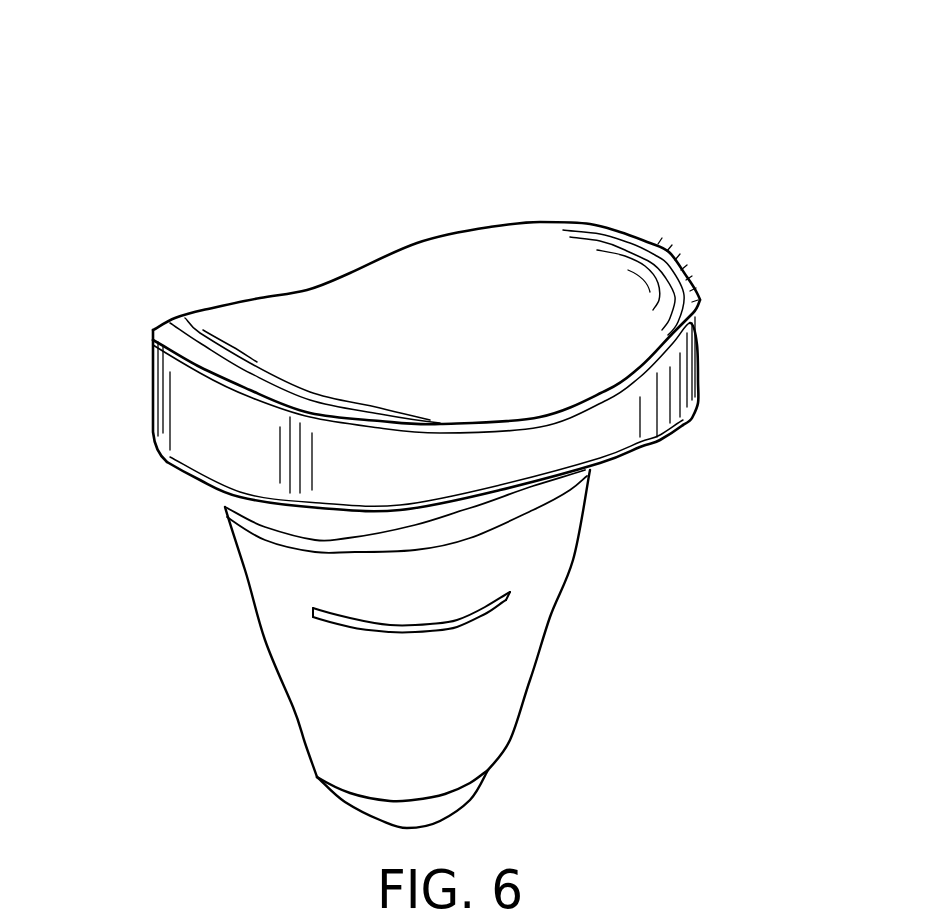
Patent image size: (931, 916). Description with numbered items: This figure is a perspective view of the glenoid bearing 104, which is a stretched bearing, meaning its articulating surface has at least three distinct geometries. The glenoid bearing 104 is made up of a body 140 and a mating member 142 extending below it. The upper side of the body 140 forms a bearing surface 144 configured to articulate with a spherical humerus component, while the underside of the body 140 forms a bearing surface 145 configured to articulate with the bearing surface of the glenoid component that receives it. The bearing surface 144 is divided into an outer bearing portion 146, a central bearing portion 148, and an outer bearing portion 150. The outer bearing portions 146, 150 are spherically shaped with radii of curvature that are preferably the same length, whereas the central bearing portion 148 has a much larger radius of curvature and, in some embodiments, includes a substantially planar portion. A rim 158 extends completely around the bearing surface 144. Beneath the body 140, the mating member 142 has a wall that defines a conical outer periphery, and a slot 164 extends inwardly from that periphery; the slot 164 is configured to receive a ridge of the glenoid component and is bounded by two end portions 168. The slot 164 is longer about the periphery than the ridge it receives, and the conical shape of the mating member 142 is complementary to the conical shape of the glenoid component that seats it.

The glenoid bearing 104 is at (238, 146).
The body 140 is at (205, 442).
The mating member 142 is at (268, 560).
The bearing surface 144 is at (408, 285).
The bearing surface 145 is at (607, 463).
The outer bearing portion 146 is at (587, 267).
The central bearing portion 148 is at (383, 337).
The outer bearing portion 150 is at (153, 335).
The rim 158 is at (700, 293).
The slot 164 is at (503, 603).
The end portions 168 is at (510, 592).